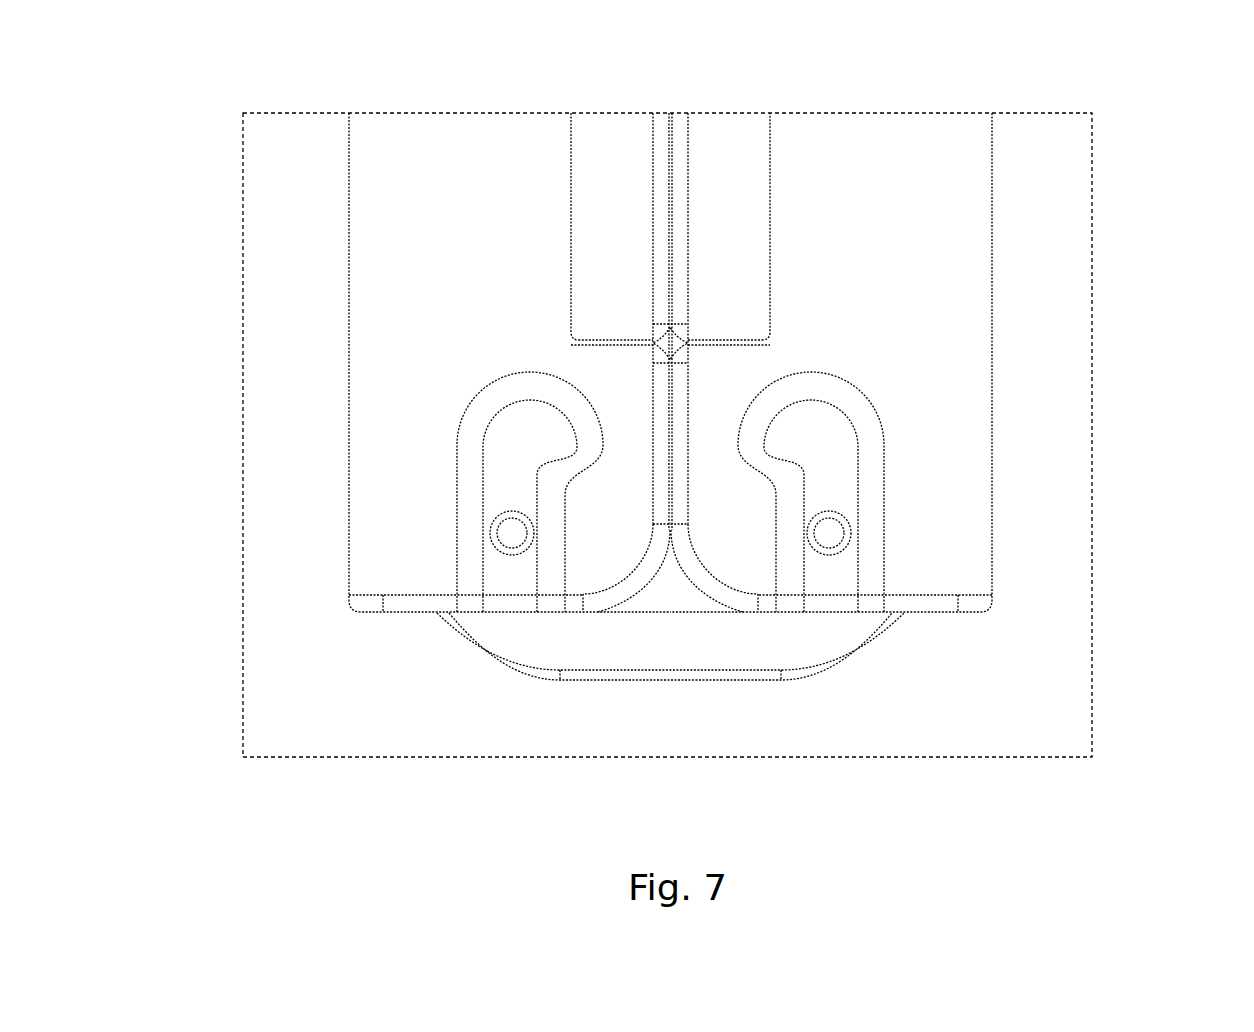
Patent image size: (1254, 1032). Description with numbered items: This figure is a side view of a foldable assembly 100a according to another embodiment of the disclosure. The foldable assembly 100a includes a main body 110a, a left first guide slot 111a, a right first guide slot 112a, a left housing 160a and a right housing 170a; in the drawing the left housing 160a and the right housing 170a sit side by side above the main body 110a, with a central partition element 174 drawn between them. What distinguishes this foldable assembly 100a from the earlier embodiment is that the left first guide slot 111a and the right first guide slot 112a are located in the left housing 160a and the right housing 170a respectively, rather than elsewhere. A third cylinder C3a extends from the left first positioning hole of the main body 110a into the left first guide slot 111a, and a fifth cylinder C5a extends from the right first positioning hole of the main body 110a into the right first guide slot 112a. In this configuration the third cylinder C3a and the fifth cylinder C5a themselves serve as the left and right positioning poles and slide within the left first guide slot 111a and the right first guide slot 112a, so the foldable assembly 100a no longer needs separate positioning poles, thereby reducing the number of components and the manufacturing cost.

The foldable assembly 100a is at (207, 60).
The main body 110a is at (837, 638).
The left first guide slot 111a is at (498, 456).
The right first guide slot 112a is at (840, 456).
The left housing 160a is at (390, 333).
The right housing 170a is at (950, 335).
The partition portion 174 is at (757, 235).
The third cylinder C3a is at (500, 529).
The fifth cylinder C5a is at (838, 529).